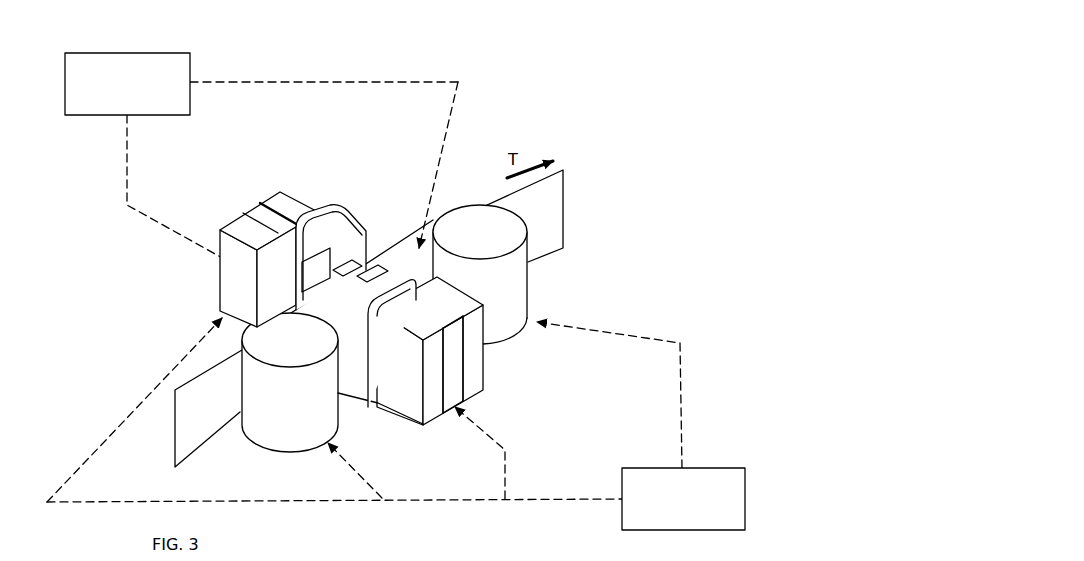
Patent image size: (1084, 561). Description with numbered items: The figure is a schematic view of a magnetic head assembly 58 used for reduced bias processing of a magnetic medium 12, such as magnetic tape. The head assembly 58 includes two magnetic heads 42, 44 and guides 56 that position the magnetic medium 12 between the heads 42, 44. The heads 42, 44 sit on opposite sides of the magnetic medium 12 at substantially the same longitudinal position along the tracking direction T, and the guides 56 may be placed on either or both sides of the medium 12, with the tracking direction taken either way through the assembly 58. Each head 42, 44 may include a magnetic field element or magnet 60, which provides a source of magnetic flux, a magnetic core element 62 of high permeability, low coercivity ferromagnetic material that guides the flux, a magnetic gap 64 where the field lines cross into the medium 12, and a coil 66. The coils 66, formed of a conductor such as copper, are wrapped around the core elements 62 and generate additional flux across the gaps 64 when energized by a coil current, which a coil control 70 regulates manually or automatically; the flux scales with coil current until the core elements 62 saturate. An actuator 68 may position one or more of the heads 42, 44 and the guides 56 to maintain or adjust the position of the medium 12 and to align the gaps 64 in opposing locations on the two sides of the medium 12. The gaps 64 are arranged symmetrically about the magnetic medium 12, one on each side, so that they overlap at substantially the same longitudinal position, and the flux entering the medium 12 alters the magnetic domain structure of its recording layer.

The magnetic medium 12 is at (547, 218).
The magnetic head 42 is at (490, 383).
The magnetic head 44 is at (263, 183).
The guide 56 is at (515, 273).
The magnetic head assembly 58 is at (612, 98).
The magnetic field element 60 is at (258, 212).
The magnetic core element 62 is at (228, 290).
The magnetic gap 64 is at (360, 270).
The coil 66 is at (332, 220).
The actuator 68 is at (745, 482).
The coil control 70 is at (190, 63).